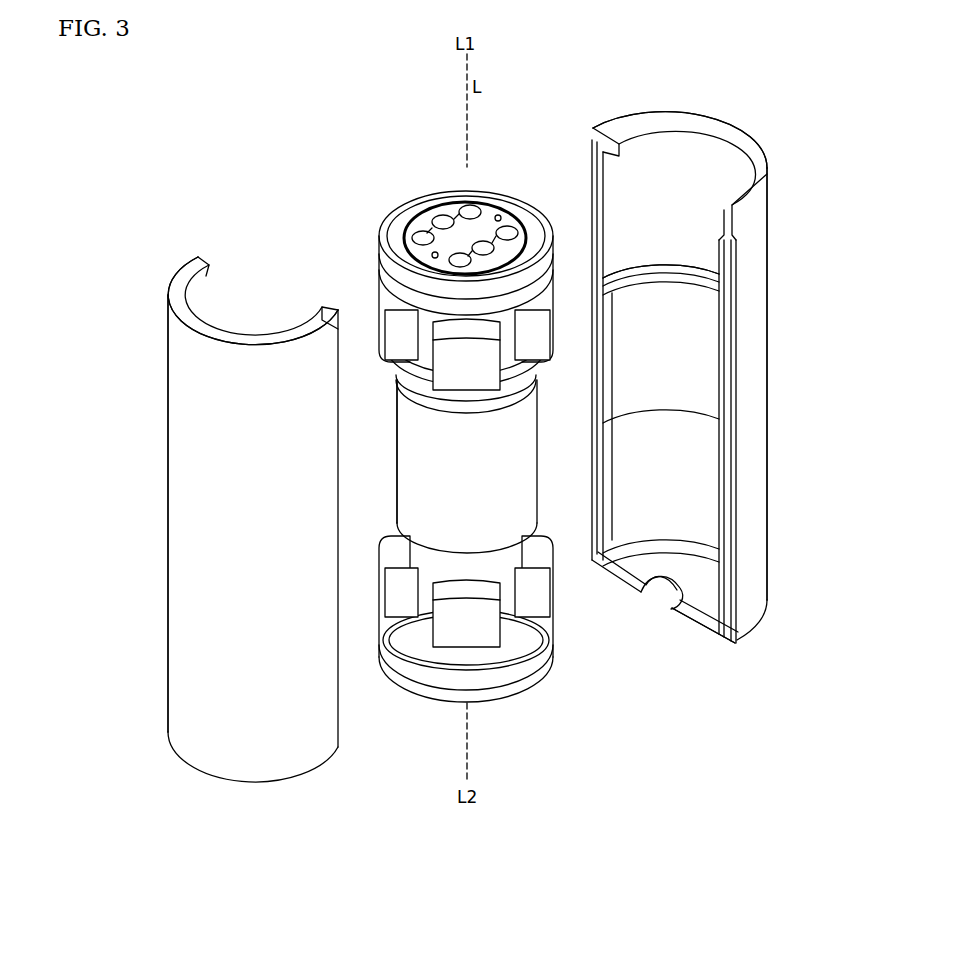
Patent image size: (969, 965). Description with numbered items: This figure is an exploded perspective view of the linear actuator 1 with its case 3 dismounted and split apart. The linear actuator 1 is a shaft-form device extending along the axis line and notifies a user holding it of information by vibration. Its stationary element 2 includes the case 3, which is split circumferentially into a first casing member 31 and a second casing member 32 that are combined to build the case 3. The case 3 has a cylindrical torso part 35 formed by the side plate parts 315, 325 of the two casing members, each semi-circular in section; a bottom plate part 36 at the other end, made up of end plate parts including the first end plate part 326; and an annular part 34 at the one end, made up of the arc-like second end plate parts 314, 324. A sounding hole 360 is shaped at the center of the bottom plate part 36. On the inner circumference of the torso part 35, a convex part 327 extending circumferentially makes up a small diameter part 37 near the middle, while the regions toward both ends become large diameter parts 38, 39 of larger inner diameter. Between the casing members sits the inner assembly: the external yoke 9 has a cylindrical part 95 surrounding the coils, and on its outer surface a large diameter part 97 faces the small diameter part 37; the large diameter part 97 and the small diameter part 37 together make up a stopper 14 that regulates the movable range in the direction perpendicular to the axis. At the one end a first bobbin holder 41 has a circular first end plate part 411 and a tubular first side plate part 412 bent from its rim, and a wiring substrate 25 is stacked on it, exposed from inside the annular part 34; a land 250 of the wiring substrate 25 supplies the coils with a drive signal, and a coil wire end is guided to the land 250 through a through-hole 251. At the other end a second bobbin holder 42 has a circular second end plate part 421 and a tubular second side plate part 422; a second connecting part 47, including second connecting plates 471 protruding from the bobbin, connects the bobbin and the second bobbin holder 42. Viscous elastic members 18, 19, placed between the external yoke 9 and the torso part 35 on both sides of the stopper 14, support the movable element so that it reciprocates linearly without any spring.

The linear actuator 1 is at (250, 113).
The stationary element 2 is at (466, 490).
The case 3 is at (502, 874).
The external yoke 9 is at (541, 486).
The stopper 14 is at (596, 392).
The viscous elastic member 18 is at (533, 343).
The viscous elastic member 19 is at (537, 543).
The wiring substrate 25 is at (457, 207).
The first casing member 31 is at (325, 776).
The second casing member 32 is at (675, 634).
The annular part 34 is at (467, 207).
The torso part 35 is at (472, 450).
The bottom plate part 36 is at (708, 656).
The small diameter part 37 is at (716, 263).
The large diameter part 38 is at (693, 187).
The large diameter part 39 is at (702, 492).
The first bobbin holder 41 is at (382, 213).
The second bobbin holder 42 is at (400, 690).
The second connecting part 47 is at (447, 665).
The cylindrical part 95 is at (507, 560).
The large diameter part 97 is at (408, 437).
The land 250 is at (437, 212).
The through-hole 251 is at (503, 216).
The second end plate part 314 is at (187, 263).
The side plate part 315 is at (170, 502).
The second end plate part 324 is at (652, 120).
The side plate part 325 is at (751, 341).
The first end plate part 326 is at (698, 605).
The convex part 327 is at (693, 308).
The sounding hole 360 is at (660, 597).
The first end plate part 411 is at (410, 213).
The first side plate part 412 is at (393, 273).
The second end plate part 421 is at (505, 658).
The second side plate part 422 is at (442, 678).
The second connecting plate 471 is at (413, 648).